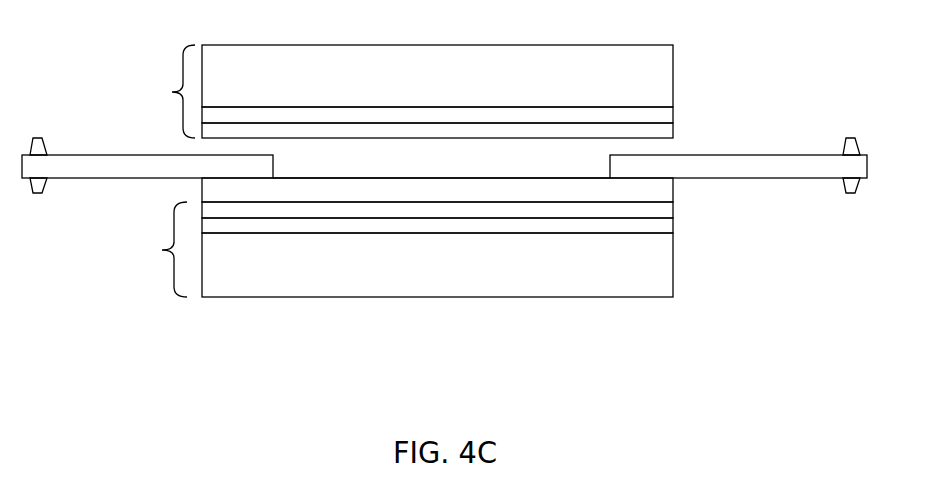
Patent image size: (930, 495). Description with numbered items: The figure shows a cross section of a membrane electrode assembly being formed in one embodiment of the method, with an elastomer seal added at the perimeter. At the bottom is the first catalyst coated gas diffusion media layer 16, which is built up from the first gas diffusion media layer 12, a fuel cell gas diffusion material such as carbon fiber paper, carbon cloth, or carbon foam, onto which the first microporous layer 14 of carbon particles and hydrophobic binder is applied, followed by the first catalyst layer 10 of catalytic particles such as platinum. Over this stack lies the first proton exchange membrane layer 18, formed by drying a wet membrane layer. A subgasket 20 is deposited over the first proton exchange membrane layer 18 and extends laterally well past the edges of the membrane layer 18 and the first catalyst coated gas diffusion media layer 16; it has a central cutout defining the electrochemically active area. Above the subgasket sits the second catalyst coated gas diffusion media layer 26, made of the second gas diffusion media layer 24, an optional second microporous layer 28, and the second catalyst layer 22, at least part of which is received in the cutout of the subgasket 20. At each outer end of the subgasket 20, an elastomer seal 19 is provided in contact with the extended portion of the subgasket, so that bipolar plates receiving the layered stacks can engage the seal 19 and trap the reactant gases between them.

The first catalyst layer 10 is at (657, 211).
The first gas diffusion media layer 12 is at (657, 274).
The first microporous layer 14 is at (657, 227).
The first catalyst coated gas diffusion media layer 16 is at (162, 250).
The first proton exchange membrane layer 18 is at (657, 187).
The elastomer seal 19 is at (38, 138).
The subgasket 20 is at (131, 171).
The second catalyst layer 22 is at (657, 132).
The second gas diffusion media layer 24 is at (657, 54).
The second catalyst coated gas diffusion media layer 26 is at (172, 92).
The second microporous layer 28 is at (657, 117).